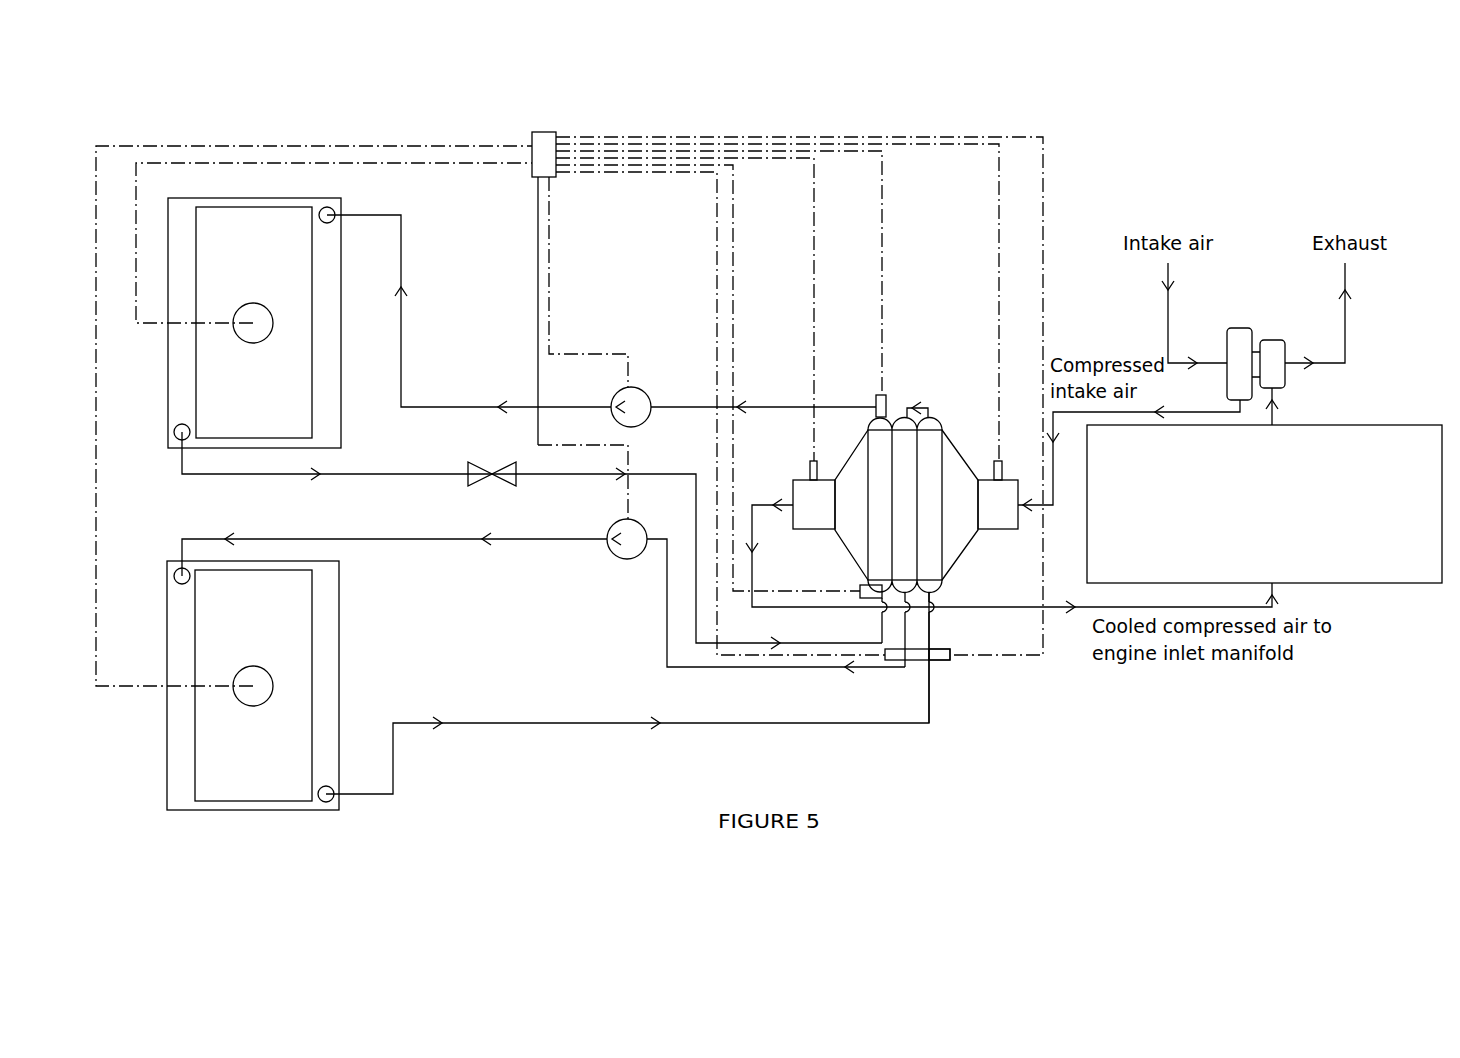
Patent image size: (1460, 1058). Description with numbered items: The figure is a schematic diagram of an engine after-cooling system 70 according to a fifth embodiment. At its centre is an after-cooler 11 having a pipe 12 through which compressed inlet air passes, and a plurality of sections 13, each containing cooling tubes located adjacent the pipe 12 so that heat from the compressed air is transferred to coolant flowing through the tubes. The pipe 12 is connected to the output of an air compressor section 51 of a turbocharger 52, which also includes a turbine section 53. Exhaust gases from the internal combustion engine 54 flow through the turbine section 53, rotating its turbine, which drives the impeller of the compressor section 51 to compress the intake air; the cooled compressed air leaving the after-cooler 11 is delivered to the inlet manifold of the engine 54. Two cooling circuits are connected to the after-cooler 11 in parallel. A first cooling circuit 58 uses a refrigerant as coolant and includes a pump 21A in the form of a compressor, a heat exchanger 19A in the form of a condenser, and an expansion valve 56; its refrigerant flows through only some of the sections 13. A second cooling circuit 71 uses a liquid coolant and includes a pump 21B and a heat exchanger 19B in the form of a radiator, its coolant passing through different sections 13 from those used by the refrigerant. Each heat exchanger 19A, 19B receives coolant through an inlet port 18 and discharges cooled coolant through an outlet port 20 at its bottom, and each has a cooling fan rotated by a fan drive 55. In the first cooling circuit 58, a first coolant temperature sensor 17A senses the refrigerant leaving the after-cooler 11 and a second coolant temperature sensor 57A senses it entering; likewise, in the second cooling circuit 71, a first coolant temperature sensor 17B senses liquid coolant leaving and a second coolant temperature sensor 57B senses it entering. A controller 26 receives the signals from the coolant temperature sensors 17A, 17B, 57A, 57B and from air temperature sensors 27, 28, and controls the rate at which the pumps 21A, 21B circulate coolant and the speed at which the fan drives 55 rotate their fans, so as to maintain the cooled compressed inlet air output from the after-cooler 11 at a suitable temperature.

The after-cooler 11 is at (912, 491).
The pipe 12 is at (806, 528).
The sections 13 is at (928, 535).
The first coolant temperature sensor 17A is at (887, 393).
The first coolant temperature sensor 17B is at (893, 662).
The inlet port 18 is at (332, 220).
The heat exchanger 19A is at (254, 323).
The heat exchanger 19B is at (253, 685).
The outlet port 20 is at (176, 425).
The pump 21A is at (638, 387).
The pump 21B is at (622, 560).
The controller 26 is at (543, 130).
The air temperature sensor 27 is at (808, 463).
The air temperature sensor 28 is at (1000, 458).
The air compressor section 51 is at (1237, 326).
The turbocharger 52 is at (1255, 320).
The turbine section 53 is at (1268, 340).
The internal combustion engine 54 is at (1264, 504).
The fan drive 55 is at (254, 303).
The expansion valve 56 is at (486, 463).
The second coolant temperature sensor 57A is at (858, 590).
The second coolant temperature sensor 57B is at (942, 662).
The first cooling circuit 58 is at (428, 373).
The engine after-cooling system 70 is at (1088, 223).
The second cooling circuit 71 is at (477, 745).